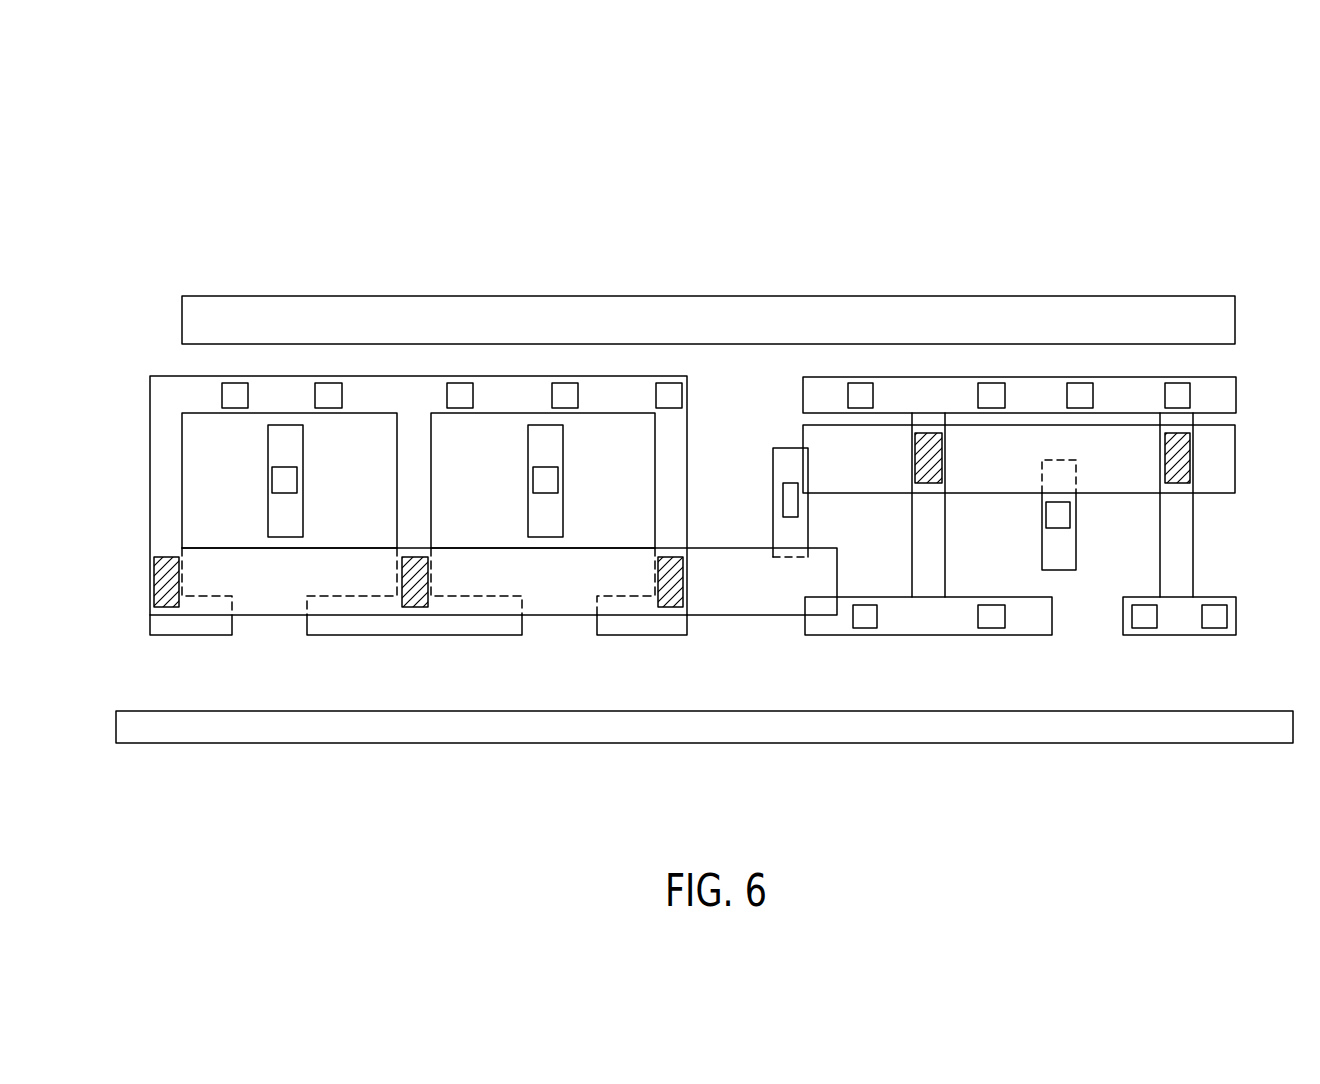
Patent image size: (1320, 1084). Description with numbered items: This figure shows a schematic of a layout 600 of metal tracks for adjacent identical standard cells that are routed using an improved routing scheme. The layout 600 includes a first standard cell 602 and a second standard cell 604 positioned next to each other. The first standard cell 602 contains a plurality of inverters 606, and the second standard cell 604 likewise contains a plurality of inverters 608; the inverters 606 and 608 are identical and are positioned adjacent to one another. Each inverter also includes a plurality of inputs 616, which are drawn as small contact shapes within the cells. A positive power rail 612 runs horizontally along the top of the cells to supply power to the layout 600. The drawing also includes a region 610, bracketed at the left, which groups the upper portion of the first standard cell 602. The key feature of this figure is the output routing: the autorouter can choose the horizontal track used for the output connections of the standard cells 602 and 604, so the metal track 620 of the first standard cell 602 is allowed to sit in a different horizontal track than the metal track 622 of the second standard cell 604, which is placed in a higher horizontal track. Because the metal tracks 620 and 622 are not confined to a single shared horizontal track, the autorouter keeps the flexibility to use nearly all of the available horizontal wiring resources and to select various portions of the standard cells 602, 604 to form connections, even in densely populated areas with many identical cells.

The layout 600 is at (1190, 164).
The first standard cell 602 is at (687, 650).
The second standard cell 604 is at (767, 325).
The inverters 606 is at (675, 437).
The inverters 608 is at (928, 559).
The metal layer 610 is at (142, 377).
The positive power rail 612 is at (294, 296).
The inputs 616 is at (267, 520).
The metal track 620 is at (547, 564).
The metal track 622 is at (1215, 467).